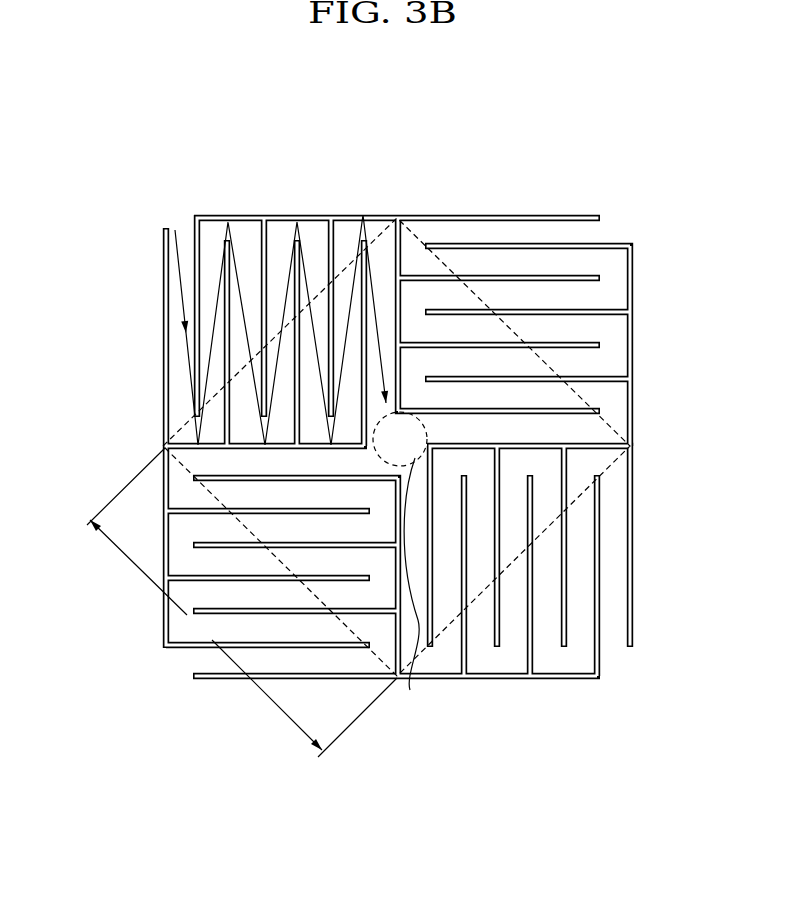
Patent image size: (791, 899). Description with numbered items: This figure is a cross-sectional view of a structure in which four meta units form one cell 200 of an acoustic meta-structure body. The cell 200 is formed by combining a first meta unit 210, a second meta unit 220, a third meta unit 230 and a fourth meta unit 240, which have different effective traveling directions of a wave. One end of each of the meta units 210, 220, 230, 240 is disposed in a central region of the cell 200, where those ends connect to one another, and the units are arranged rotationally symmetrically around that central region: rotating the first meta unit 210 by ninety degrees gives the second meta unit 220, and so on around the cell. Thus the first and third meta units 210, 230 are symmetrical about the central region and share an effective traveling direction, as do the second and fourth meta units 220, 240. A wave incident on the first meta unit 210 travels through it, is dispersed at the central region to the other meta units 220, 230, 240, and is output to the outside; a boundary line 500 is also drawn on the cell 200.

The cell 200 is at (108, 174).
The first meta unit 210 is at (289, 200).
The second meta unit 220 is at (512, 198).
The third meta unit 230 is at (548, 626).
The fourth meta unit 240 is at (311, 624).
The boundary line 500 is at (414, 589).